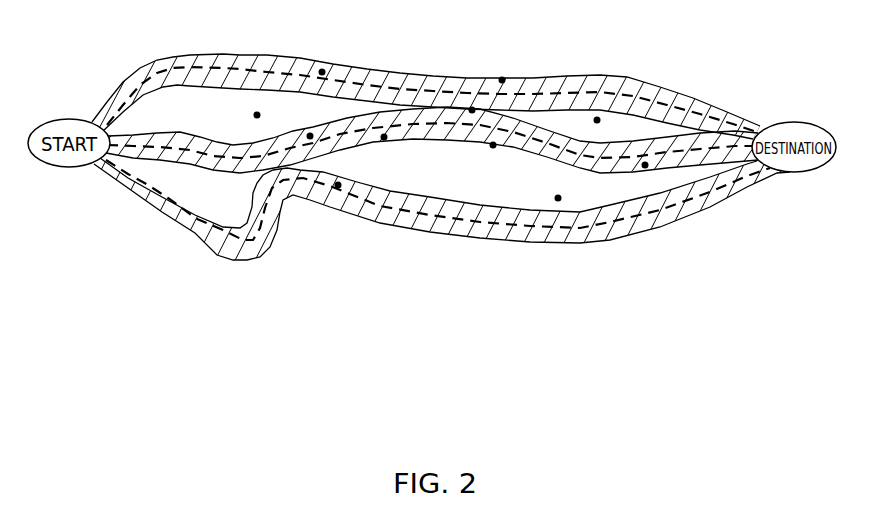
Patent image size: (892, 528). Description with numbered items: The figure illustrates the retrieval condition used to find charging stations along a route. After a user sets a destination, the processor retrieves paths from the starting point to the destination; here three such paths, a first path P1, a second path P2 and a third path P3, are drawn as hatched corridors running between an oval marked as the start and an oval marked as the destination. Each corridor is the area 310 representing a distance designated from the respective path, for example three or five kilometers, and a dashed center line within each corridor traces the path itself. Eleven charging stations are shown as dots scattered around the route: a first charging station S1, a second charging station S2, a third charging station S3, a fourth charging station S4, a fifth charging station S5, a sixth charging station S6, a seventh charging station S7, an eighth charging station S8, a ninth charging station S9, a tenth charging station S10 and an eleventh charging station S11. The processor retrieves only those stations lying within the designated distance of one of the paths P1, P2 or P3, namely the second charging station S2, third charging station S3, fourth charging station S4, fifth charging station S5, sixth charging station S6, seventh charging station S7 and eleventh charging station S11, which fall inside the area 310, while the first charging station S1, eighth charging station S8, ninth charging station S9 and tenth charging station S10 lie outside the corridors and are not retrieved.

The area 310 is at (446, 200).
The first path P1 is at (720, 122).
The second path P2 is at (699, 160).
The third path P3 is at (748, 190).
The first charging station S1 is at (244, 115).
The second charging station S2 is at (323, 59).
The third charging station S3 is at (302, 127).
The fourth charging station S4 is at (347, 174).
The fifth charging station S5 is at (394, 151).
The sixth charging station S6 is at (503, 68).
The seventh charging station S7 is at (464, 103).
The eighth charging station S8 is at (495, 158).
The ninth charging station S9 is at (547, 200).
The tenth charging station S10 is at (617, 130).
The eleventh charging station S11 is at (645, 180).